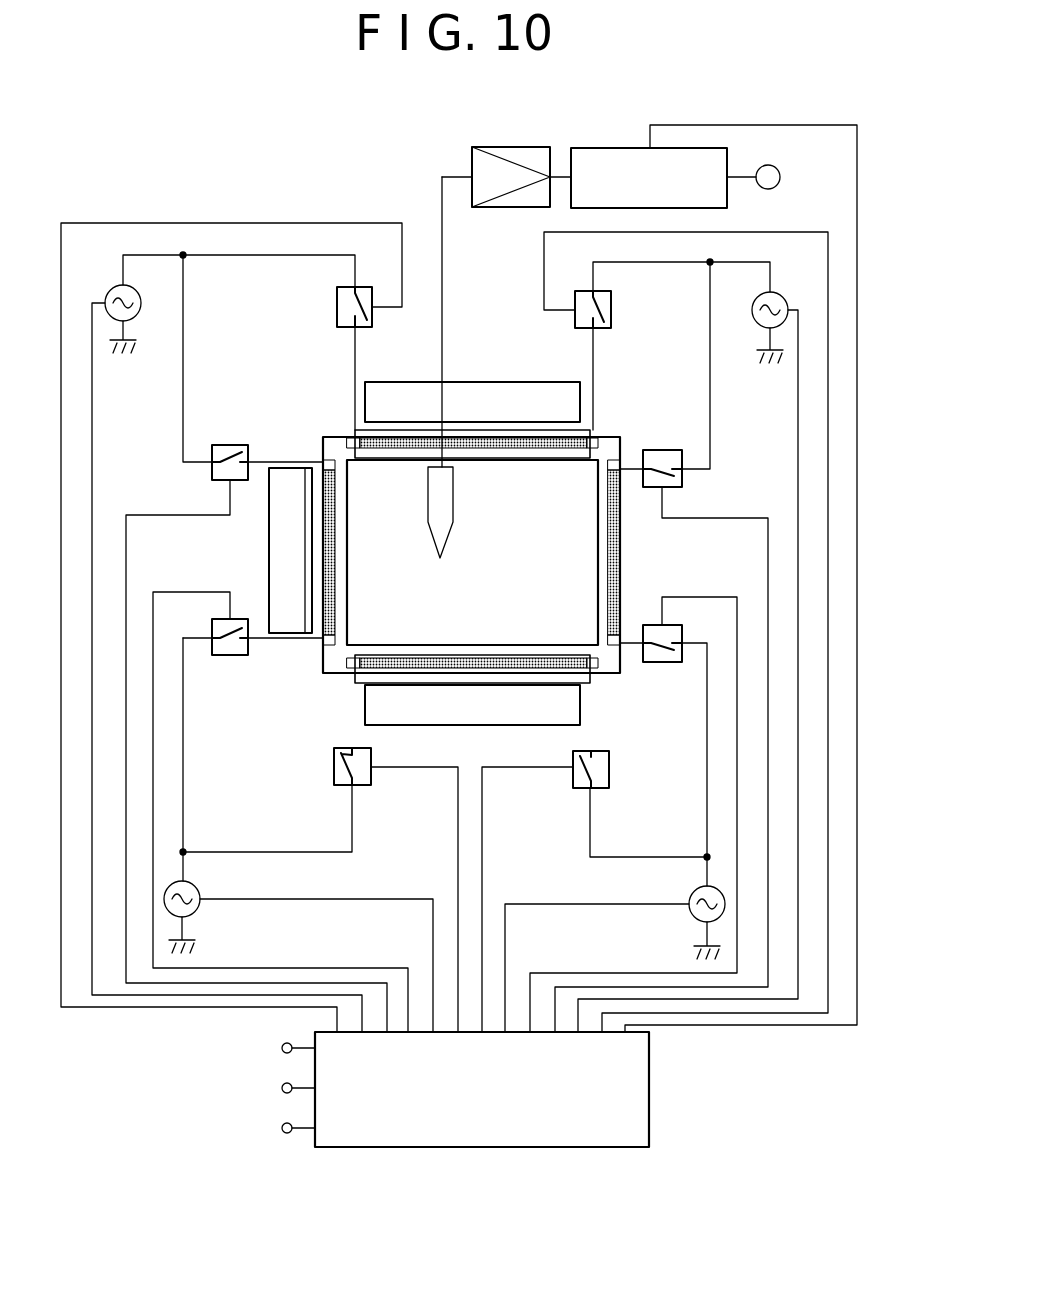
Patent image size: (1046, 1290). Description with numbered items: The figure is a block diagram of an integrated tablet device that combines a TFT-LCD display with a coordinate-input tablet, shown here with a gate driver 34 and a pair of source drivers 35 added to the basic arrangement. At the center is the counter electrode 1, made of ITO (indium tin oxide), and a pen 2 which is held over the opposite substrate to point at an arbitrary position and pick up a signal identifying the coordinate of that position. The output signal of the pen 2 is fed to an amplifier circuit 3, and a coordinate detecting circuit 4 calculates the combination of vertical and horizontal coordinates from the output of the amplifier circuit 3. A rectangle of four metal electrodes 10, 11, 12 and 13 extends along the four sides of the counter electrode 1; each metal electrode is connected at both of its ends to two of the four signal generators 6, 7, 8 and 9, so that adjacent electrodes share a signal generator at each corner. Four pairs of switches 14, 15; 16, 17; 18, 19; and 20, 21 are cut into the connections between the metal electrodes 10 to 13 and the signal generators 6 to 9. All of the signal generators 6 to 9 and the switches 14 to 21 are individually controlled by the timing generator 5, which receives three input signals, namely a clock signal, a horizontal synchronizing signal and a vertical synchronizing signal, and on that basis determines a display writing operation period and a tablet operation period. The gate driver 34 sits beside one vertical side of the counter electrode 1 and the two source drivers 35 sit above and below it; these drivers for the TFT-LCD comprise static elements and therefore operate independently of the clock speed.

The counter electrode 1 is at (358, 632).
The pen 2 is at (450, 532).
The amplifier circuit 3 is at (472, 152).
The coordinate detecting circuit 4 is at (620, 148).
The timing signal generator circuit 5 is at (650, 1106).
The signal generator circuit 6 is at (134, 316).
The signal generator circuit 7 is at (752, 326).
The signal generator circuit 8 is at (690, 897).
The signal generator circuit 9 is at (199, 893).
The metal electrode 10 is at (375, 442).
The metal electrode 11 is at (620, 578).
The metal electrode 12 is at (372, 668).
The metal electrode 13 is at (328, 460).
The switching circuit 14 is at (230, 445).
The switching circuit 15 is at (337, 308).
The switching circuit 16 is at (611, 312).
The switching circuit 17 is at (658, 450).
The switching circuit 18 is at (662, 662).
The switching circuit 19 is at (609, 768).
The switching circuit 20 is at (334, 766).
The switching circuit 21 is at (230, 656).
The gate driver 34 is at (269, 553).
The source driver 35 is at (493, 385).